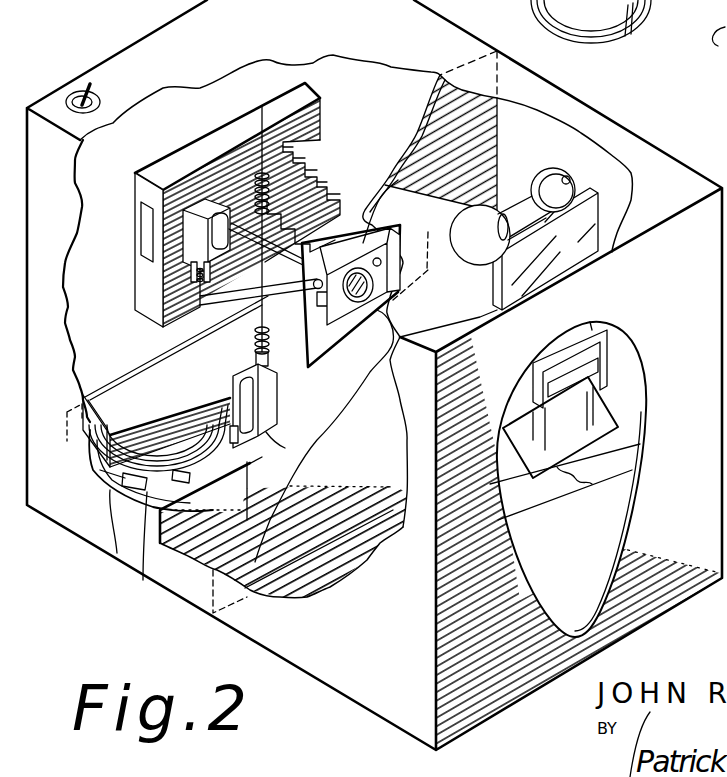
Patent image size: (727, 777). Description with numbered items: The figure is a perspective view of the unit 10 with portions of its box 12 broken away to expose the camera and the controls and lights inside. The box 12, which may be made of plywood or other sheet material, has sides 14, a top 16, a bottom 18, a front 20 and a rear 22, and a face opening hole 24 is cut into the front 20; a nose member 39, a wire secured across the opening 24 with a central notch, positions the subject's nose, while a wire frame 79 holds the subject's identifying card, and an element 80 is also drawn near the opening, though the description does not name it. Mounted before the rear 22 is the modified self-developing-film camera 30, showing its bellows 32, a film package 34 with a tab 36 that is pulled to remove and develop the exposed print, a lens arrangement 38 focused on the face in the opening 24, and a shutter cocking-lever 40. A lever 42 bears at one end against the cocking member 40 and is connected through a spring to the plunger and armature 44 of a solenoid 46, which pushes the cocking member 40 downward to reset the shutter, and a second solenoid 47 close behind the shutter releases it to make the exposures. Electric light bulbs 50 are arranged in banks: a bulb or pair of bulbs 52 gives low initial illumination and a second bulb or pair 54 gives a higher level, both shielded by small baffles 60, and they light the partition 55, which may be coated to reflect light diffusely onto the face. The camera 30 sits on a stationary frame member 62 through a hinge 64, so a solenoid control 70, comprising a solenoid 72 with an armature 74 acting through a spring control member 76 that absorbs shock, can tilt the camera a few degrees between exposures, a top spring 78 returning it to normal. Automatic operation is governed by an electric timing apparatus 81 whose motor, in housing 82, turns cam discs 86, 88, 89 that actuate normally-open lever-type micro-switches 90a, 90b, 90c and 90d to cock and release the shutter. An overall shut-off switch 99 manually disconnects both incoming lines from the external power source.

The unit 10 is at (712, 130).
The box 12 is at (627, 78).
The sides 14 is at (382, 624).
The top 16 is at (385, 13).
The bottom 18 is at (360, 574).
The front 20 is at (685, 385).
The rear 22 is at (79, 88).
The face opening hole 24 is at (630, 343).
The camera 30 is at (290, 105).
The bellows 32 is at (315, 185).
The film package 34 is at (143, 225).
The tab 36 is at (146, 252).
The lens arrangement 38 is at (405, 244).
The nose member 39 is at (580, 478).
The shutter cocking-lever 40 is at (348, 296).
The lever 42 is at (260, 302).
The plunger and armature 44 is at (208, 262).
The solenoid 46 is at (197, 190).
The second solenoid 47 is at (325, 178).
The electric light bulbs 50 is at (508, 200).
The bulb or pair of bulbs 52 is at (496, 248).
The second bulb or pair of bulbs 54 is at (565, 489).
The partition 55 is at (434, 217).
The baffles 60 is at (592, 231).
The stationary frame member 62 is at (230, 413).
The hinge 64 is at (175, 341).
The solenoid control 70 is at (282, 422).
The solenoid 72 is at (262, 406).
The armature 74 is at (222, 363).
The spring control member 76 is at (258, 326).
The top spring 78 is at (303, 162).
The wire frame 79 is at (592, 330).
The cartridge holder 80 is at (585, 396).
The electric timing apparatus 81 is at (251, 492).
The housing 82 is at (240, 503).
The cam disc 86 is at (112, 496).
The cam disc 88 is at (112, 468).
The cam disc 89 is at (176, 445).
The micro-switch 90a is at (88, 532).
The micro-switch 90b is at (123, 542).
The micro-switch 90c is at (326, 371).
The micro-switch 90d is at (294, 441).
The overall shut-off switch 99 is at (97, 90).